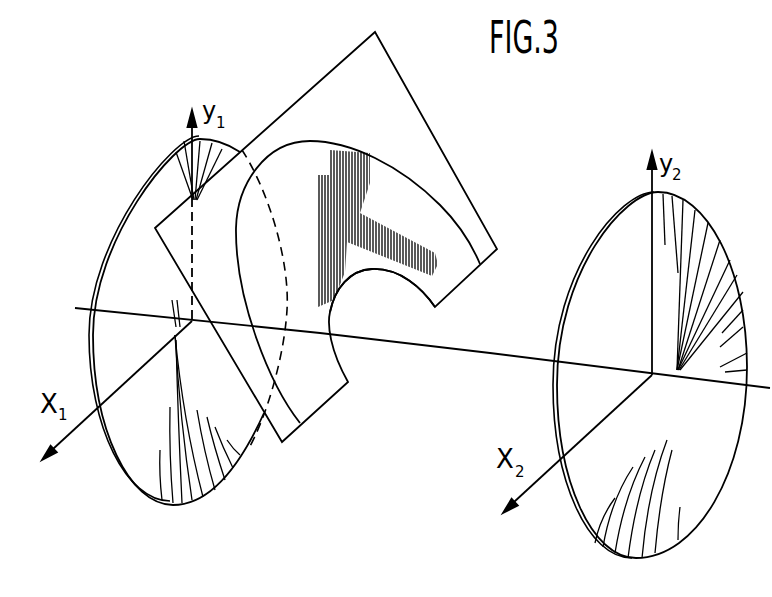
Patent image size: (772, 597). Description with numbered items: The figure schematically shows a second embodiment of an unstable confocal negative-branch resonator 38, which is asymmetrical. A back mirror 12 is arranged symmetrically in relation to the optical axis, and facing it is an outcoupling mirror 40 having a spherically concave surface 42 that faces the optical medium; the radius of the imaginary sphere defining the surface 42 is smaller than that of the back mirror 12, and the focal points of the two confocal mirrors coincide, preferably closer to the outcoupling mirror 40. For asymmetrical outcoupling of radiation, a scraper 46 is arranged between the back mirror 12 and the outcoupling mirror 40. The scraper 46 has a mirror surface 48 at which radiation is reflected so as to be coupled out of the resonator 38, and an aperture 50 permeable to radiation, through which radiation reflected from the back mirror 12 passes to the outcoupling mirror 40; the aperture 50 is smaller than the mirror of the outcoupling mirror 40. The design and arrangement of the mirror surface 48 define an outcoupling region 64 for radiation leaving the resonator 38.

The back mirror 12 is at (695, 498).
The resonator 38 is at (578, 169).
The outcoupling mirror 40 is at (193, 487).
The spherically concave surface 42 is at (130, 283).
The scraper 46 is at (452, 180).
The mirror surface 48 is at (307, 385).
The aperture 50 is at (397, 277).
The outcoupling region 64 is at (307, 176).